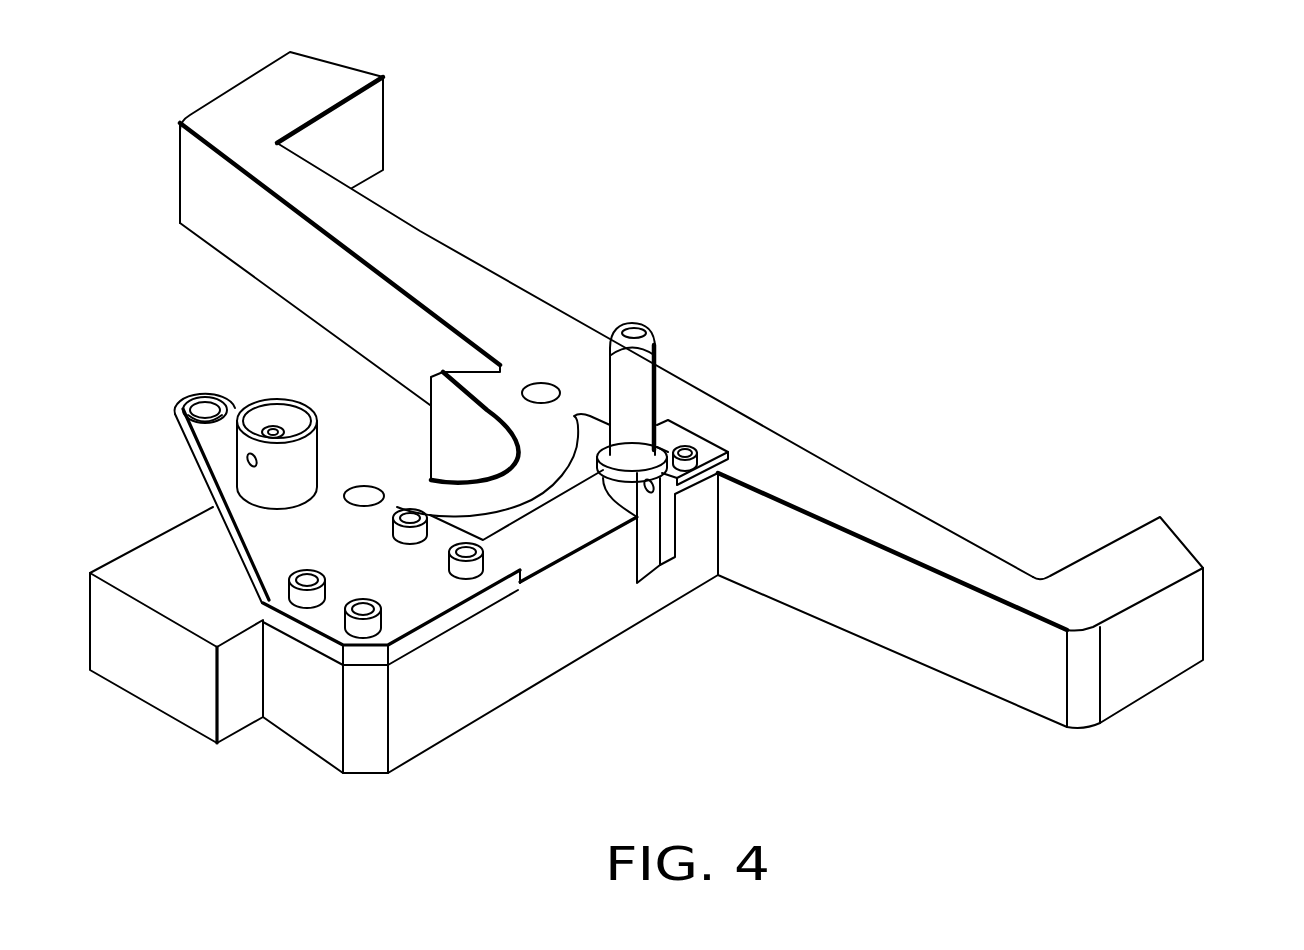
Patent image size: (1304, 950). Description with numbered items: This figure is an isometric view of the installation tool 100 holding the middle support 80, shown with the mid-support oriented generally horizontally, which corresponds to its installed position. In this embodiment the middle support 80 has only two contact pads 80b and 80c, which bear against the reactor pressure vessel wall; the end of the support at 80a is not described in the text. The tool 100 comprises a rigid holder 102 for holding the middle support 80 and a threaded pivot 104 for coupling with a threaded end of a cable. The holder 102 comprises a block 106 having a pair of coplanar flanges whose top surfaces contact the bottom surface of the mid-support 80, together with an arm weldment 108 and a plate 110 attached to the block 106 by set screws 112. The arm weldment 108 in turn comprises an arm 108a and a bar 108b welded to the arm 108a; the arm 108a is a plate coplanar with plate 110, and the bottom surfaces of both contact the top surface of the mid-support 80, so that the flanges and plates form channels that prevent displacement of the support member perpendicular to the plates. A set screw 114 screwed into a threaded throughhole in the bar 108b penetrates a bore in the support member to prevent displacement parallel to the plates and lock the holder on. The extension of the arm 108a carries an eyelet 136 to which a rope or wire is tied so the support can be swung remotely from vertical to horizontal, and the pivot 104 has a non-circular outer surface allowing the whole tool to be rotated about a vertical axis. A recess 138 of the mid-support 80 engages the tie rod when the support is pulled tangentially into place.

The middle support 80 is at (519, 287).
The bar end block 80a is at (160, 686).
The contact pad 80b is at (1180, 541).
The contact pad 80c is at (336, 62).
The installation tool 100 is at (186, 361).
The rigid holder 102 is at (626, 630).
The threaded pivot 104 is at (638, 373).
The block 106 is at (474, 705).
The arm weldment 108 is at (196, 478).
The arm 108a is at (326, 518).
The bar 108b is at (266, 402).
The plate 110 is at (722, 446).
The set screws 112 is at (290, 580).
The set screw 114 is at (276, 426).
The eyelet 136 is at (198, 400).
The recess 138 is at (465, 437).